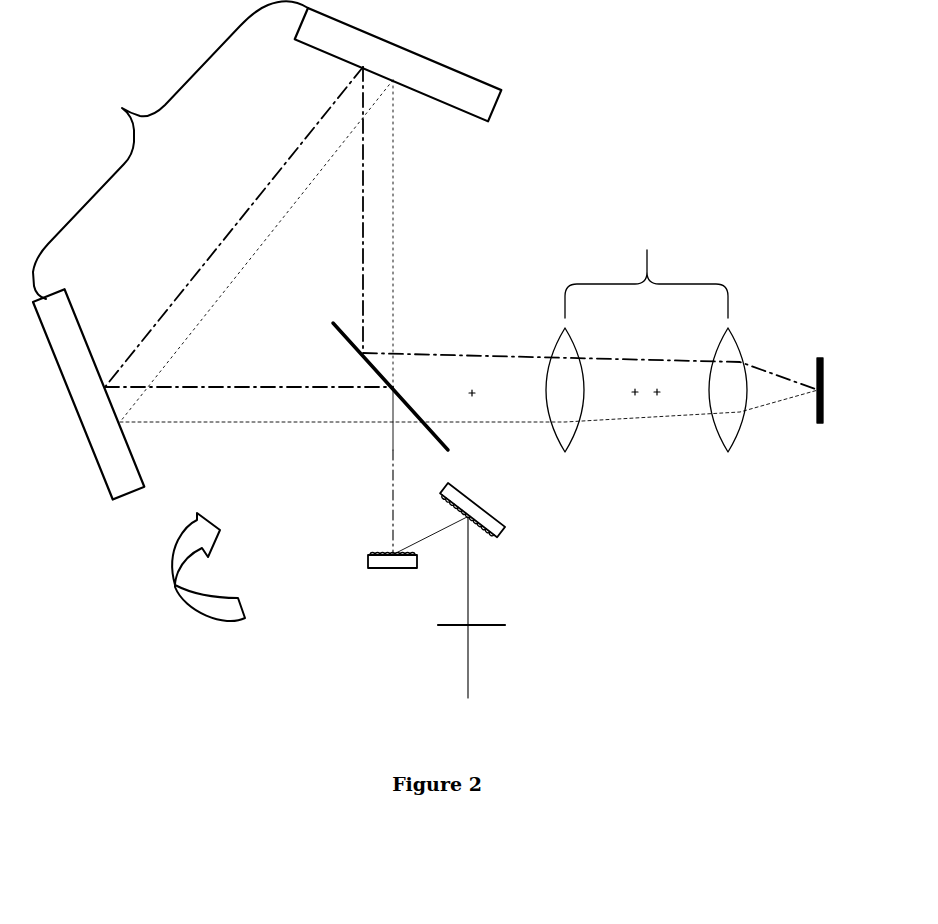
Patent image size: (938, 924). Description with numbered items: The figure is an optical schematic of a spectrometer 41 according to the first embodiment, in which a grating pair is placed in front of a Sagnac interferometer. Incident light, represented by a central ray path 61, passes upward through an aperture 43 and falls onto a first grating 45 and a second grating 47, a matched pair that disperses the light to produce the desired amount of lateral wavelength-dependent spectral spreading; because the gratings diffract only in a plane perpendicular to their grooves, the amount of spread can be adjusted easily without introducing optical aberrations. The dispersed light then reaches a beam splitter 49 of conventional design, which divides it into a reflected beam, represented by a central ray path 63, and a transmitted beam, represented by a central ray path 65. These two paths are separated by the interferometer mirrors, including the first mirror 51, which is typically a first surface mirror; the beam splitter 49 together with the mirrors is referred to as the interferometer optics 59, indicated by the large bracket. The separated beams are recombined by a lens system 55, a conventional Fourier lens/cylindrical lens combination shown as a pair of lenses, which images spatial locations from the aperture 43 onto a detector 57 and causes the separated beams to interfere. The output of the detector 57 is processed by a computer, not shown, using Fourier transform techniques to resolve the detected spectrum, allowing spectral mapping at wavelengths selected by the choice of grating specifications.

The spectrometer 41 is at (226, 567).
The aperture 43 is at (474, 618).
The first grating 45 is at (486, 494).
The second grating 47 is at (388, 580).
The beam splitter 49 is at (341, 347).
The first mirror 51 is at (88, 394).
The lens system 55 is at (521, 230).
The detector 57 is at (830, 370).
The interferometer optics 59 is at (170, 150).
The central ray path 61 is at (458, 655).
The central ray path 63 is at (230, 378).
The central ray path 65 is at (403, 210).